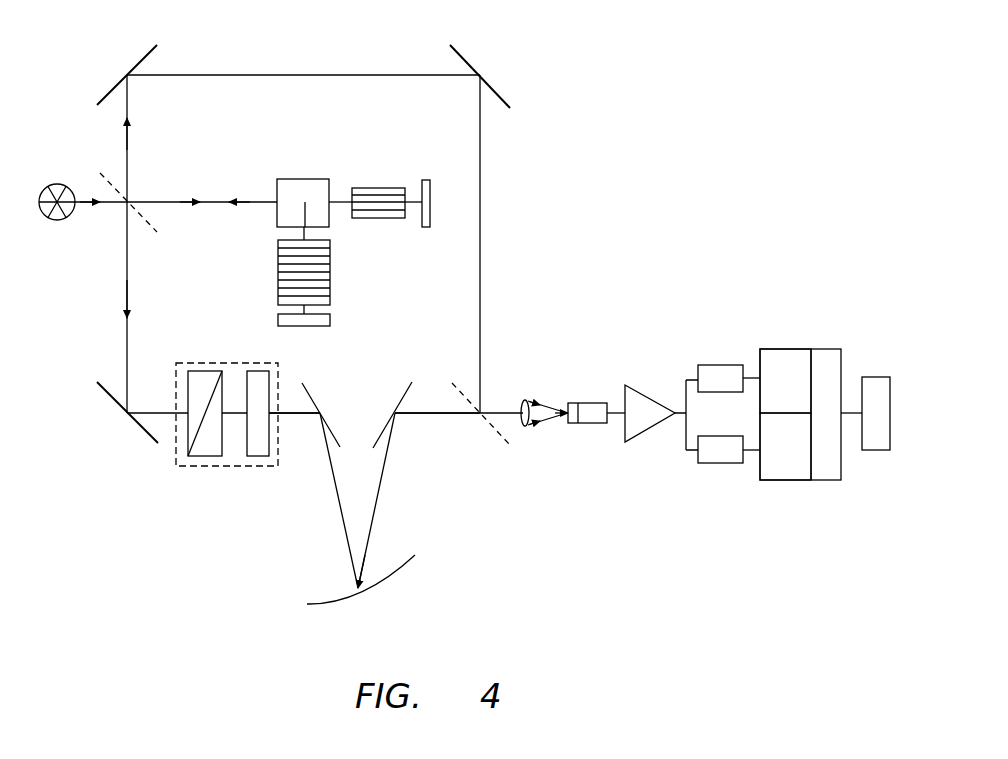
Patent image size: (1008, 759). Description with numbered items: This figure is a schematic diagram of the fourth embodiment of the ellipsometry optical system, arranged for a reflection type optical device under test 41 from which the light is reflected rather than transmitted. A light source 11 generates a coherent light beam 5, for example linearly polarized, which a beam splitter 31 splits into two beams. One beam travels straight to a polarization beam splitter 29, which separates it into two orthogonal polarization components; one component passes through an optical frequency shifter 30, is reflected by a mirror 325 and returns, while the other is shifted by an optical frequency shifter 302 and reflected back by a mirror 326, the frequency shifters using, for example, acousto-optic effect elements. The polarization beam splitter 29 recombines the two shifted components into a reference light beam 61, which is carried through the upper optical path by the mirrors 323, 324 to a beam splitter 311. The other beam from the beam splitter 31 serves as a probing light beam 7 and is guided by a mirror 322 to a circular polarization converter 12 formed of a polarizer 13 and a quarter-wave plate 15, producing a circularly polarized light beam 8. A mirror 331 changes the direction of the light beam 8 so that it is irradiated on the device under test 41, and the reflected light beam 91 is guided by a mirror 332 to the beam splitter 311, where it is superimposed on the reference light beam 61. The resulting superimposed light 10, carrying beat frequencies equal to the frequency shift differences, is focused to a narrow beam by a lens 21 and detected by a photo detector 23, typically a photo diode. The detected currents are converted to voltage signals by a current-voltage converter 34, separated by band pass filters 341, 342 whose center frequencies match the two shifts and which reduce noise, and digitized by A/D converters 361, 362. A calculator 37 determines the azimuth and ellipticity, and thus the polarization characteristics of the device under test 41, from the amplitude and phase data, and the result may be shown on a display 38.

The light beam 5 is at (113, 207).
The probing light beam 7 is at (124, 305).
The circularly polarized light beam 8 is at (287, 416).
The superimposed light 10 is at (497, 413).
The light source 11 is at (62, 184).
The circular polarization converter 12 is at (225, 363).
The polarizer 13 is at (205, 458).
The λ/4 plate 15 is at (258, 458).
The lens 21 is at (525, 427).
The photo detector 23 is at (570, 403).
The polarization beam splitter 29 is at (305, 179).
The optical frequency shifter 30 is at (388, 188).
The beam splitter 31 is at (158, 233).
The current-voltage converter 34 is at (650, 432).
The calculator 37 is at (822, 349).
The display 38 is at (870, 377).
The optical device under test 41 is at (320, 602).
The reference light beam 61 is at (221, 80).
The reflected light beam 91 is at (418, 413).
The optical frequency shifter 302 is at (332, 261).
The beam splitter 311 is at (490, 432).
The mirror 322 is at (100, 392).
The mirror 323 is at (147, 50).
The mirror 324 is at (463, 55).
The mirror 325 is at (431, 195).
The mirror 326 is at (332, 315).
The mirror 331 is at (312, 393).
The mirror 332 is at (400, 397).
The band pass filter 341 is at (708, 365).
The band pass filter 342 is at (725, 463).
The A/D converter 361 is at (785, 349).
The A/D converter 362 is at (780, 481).